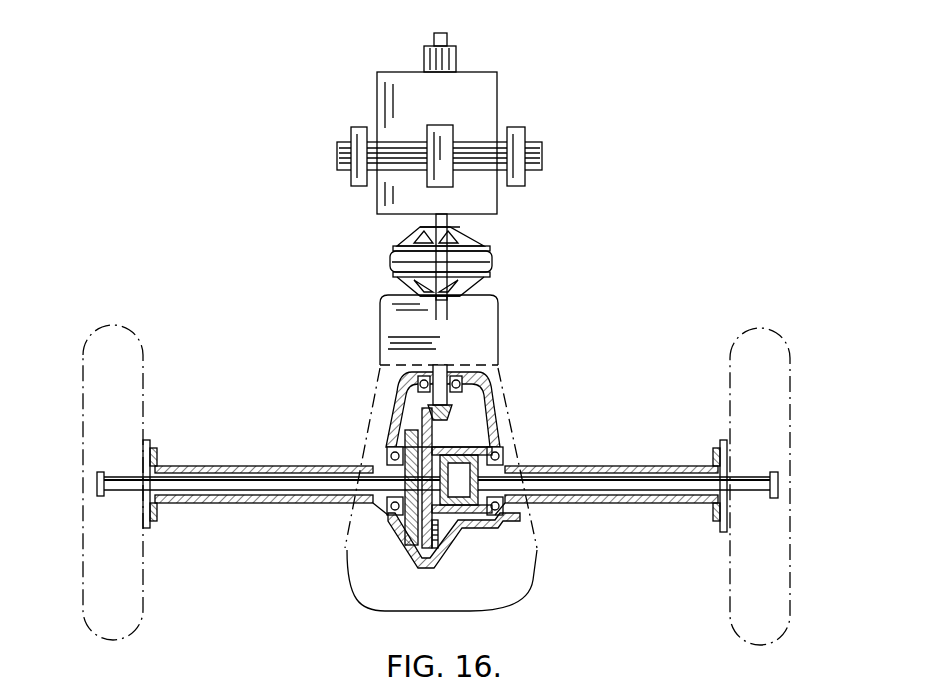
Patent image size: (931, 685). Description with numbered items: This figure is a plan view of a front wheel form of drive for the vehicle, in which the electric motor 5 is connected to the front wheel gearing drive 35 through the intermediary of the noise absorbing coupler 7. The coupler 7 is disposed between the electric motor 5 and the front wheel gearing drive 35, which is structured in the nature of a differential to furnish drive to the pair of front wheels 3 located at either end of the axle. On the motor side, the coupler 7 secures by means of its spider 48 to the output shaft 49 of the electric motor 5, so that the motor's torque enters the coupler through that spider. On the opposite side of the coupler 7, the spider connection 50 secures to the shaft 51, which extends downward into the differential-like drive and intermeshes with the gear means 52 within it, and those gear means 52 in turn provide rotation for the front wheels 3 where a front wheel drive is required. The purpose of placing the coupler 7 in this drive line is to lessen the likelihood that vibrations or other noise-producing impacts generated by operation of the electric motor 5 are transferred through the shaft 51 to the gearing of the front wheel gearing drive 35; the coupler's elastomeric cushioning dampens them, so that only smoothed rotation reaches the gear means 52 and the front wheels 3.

The front wheels 3 is at (83, 392).
The electric motor 5 is at (498, 216).
The noise absorbing coupler 7 is at (449, 257).
The spider 48 is at (466, 243).
The output shaft 49 is at (430, 222).
The spider connection 50 is at (408, 271).
The shaft 51 is at (470, 297).
The front wheel gearing drive 35 is at (498, 358).
The gear means 52 is at (412, 555).